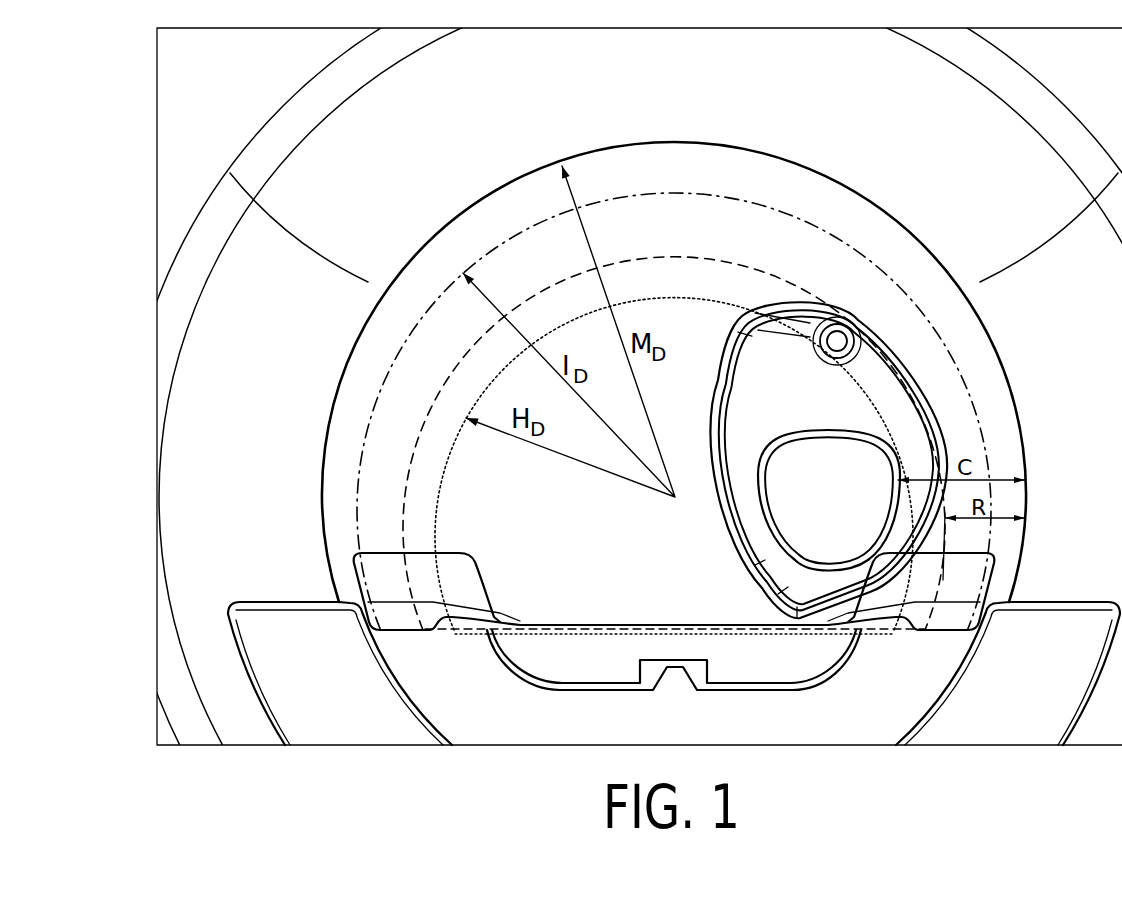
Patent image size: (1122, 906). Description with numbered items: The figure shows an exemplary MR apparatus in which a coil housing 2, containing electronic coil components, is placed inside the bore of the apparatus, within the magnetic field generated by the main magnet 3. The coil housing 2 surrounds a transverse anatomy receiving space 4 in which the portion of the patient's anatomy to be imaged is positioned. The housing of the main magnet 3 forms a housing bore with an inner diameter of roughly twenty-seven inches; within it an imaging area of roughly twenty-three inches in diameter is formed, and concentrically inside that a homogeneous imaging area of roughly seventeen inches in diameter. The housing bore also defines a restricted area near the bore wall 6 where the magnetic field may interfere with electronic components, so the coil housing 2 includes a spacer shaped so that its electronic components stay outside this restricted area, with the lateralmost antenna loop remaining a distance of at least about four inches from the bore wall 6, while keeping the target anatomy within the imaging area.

The coil housing 2 is at (720, 540).
The main magnet 3 is at (1086, 310).
The transverse anatomy receiving space 4 is at (836, 513).
The bore wall 6 is at (1022, 415).